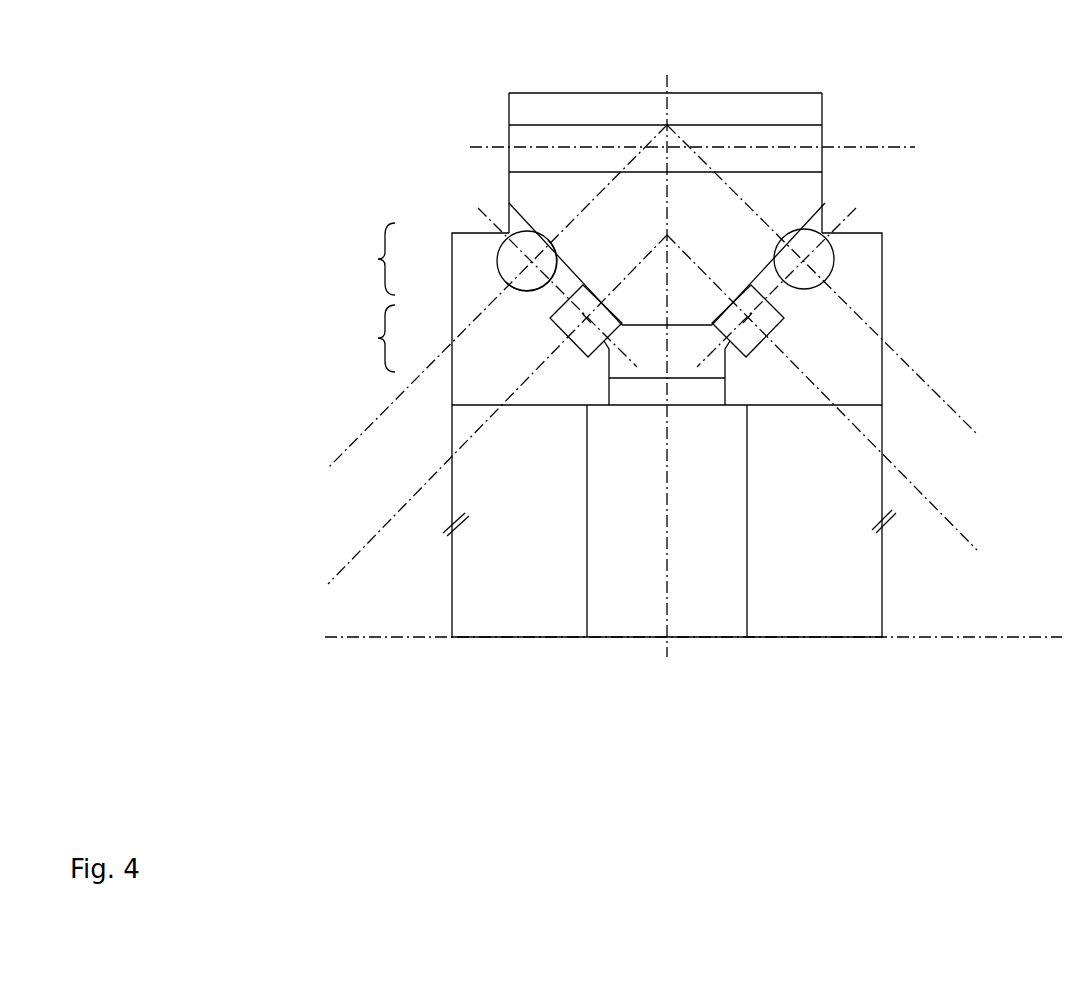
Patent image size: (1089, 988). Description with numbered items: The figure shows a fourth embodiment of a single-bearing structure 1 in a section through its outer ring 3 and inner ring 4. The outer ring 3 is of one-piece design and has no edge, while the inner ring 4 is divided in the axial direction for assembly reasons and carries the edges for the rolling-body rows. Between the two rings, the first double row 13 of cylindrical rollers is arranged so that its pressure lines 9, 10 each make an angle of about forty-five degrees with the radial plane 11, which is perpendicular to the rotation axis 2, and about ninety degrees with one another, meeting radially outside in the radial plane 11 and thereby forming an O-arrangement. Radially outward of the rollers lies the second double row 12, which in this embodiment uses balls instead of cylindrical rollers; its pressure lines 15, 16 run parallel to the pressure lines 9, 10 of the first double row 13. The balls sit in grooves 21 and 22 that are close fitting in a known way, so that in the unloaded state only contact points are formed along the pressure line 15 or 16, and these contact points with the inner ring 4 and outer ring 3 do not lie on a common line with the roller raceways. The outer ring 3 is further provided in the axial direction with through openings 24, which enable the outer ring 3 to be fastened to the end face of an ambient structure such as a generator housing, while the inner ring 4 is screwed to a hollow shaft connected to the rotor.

The single-bearing structure 1 is at (912, 94).
The rotation axis 2 is at (1014, 636).
The outer ring 3 is at (783, 110).
The inner ring 4 is at (860, 333).
The pressure line 9 is at (575, 280).
The pressure line 10 is at (752, 280).
The radial plane 11 is at (669, 83).
The second double row 12 is at (367, 259).
The first double row 13 is at (367, 338).
The pressure line 15 is at (574, 216).
The pressure line 16 is at (761, 216).
The groove 21 is at (557, 240).
The groove 22 is at (513, 290).
The through openings 24 is at (517, 140).